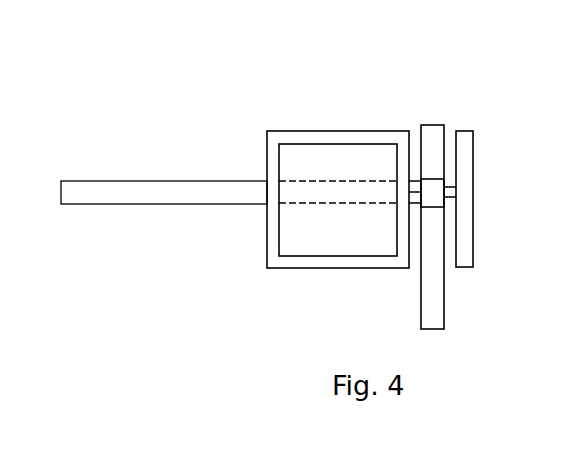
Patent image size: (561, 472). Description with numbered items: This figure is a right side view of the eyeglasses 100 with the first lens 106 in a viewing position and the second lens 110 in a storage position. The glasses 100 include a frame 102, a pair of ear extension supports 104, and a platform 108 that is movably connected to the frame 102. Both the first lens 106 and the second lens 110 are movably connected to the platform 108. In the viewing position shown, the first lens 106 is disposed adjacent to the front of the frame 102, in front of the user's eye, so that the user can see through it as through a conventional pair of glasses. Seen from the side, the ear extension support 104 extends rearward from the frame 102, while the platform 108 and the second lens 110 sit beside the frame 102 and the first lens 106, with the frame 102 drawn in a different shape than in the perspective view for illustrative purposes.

The eyeglasses 100 is at (476, 100).
The frame 102 is at (432, 124).
The ear extension support 104 is at (108, 180).
The first lens 106 is at (475, 152).
The platform 108 is at (432, 209).
The second lens 110 is at (300, 130).